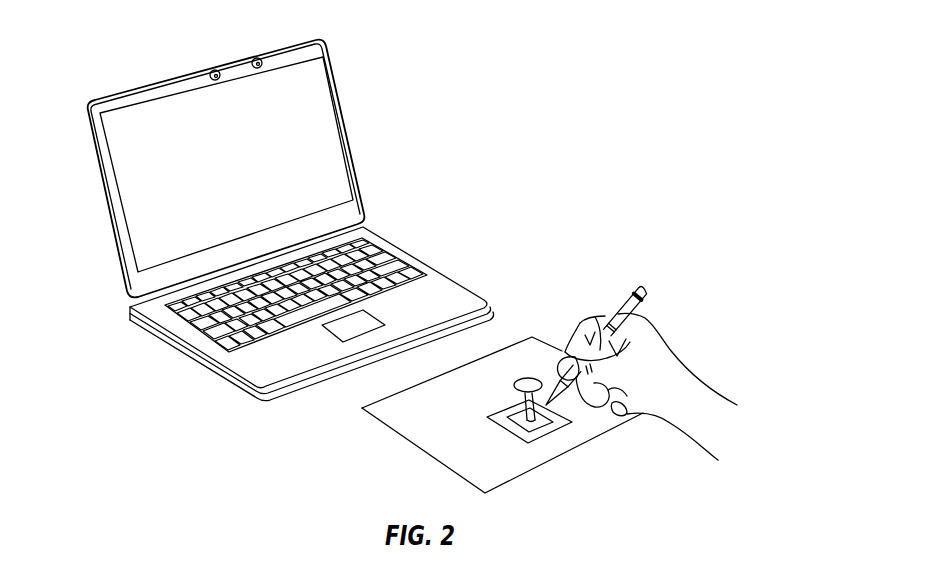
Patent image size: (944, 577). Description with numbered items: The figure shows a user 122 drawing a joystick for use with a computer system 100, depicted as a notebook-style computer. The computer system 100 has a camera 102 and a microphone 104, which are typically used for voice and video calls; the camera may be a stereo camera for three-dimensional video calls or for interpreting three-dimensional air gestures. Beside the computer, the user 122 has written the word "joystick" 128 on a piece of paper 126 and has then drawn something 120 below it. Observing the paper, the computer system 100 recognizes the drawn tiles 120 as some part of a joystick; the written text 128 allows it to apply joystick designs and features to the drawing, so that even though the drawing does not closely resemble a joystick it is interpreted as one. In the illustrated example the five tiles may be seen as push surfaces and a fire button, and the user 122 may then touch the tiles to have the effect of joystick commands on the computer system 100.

The computer system 100 is at (291, 207).
The camera 102 is at (210, 71).
The microphone 104 is at (258, 62).
The drawn tiles 120 is at (552, 433).
The user 122 is at (660, 360).
The piece of paper 126 is at (527, 348).
The written word joystick 128 is at (430, 403).